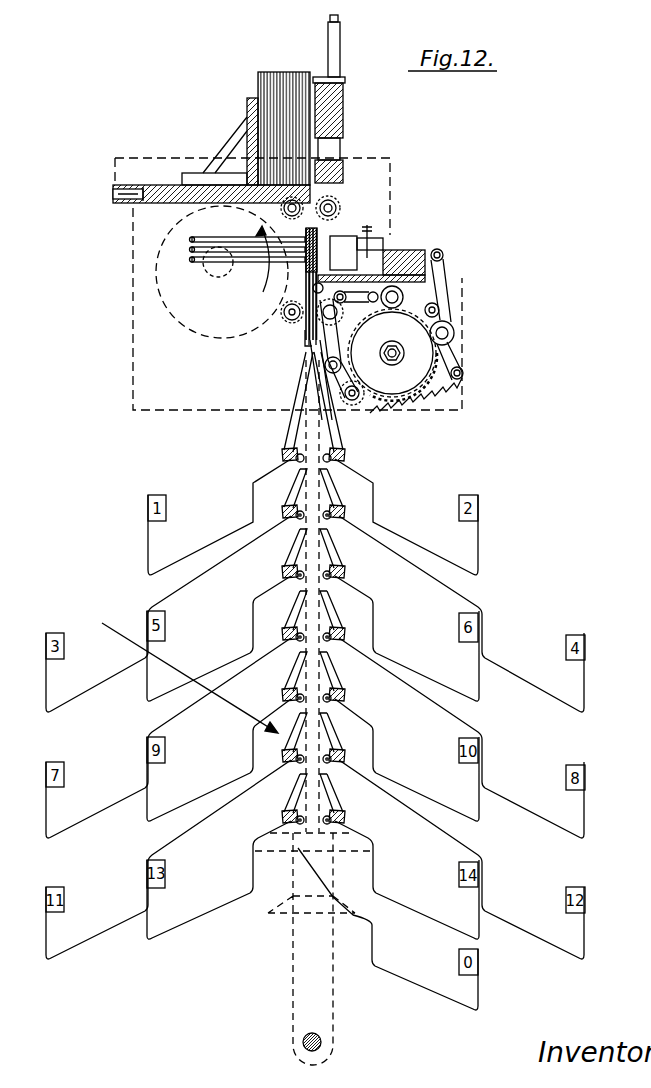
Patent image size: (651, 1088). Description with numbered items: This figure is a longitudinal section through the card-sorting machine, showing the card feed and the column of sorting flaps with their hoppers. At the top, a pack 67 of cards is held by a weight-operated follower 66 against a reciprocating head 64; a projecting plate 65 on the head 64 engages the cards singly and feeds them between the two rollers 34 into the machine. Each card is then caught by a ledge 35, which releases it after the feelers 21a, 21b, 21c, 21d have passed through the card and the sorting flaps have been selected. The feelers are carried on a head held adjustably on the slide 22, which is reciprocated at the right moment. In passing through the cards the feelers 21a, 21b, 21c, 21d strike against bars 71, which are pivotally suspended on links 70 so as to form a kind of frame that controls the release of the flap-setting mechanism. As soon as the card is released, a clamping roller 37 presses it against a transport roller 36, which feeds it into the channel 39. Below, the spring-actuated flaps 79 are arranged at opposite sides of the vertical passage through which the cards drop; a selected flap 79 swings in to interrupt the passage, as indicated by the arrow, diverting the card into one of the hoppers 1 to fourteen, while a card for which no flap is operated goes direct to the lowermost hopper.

The hopper 1 is at (467, 238).
The feeler 21a is at (320, 240).
The feeler 21b is at (321, 250).
The feeler 21c is at (322, 258).
The feeler 21d is at (323, 266).
The slide 22 is at (420, 251).
The rollers 34 is at (341, 206).
The ledge 35 is at (305, 338).
The transport roller 36 is at (282, 320).
The clamping roller 37 is at (344, 310).
The channel 39 is at (318, 445).
The reciprocating head 64 is at (343, 116).
The projecting plate 65 is at (317, 84).
The weight-operated follower 66 is at (240, 140).
The pack 67 is at (265, 85).
The link 70 is at (200, 229).
The bars 71 is at (252, 244).
The flap 79 is at (329, 610).